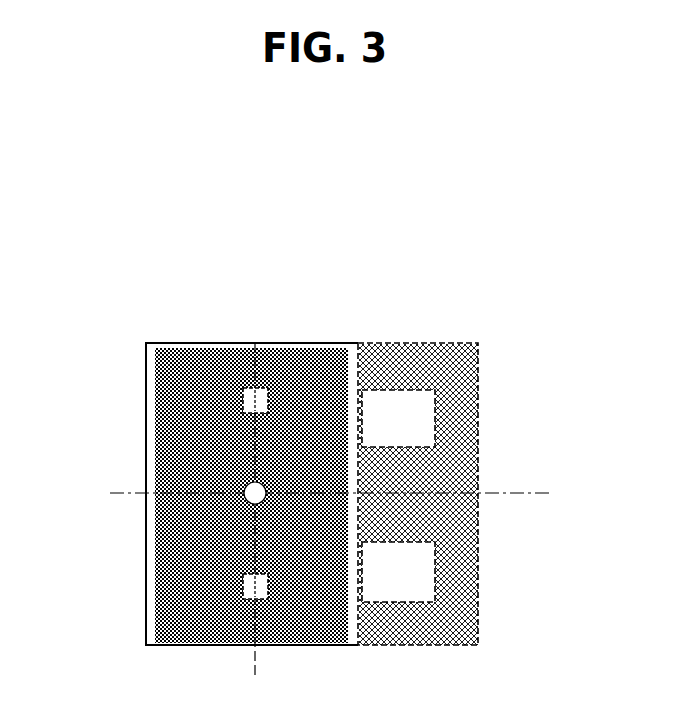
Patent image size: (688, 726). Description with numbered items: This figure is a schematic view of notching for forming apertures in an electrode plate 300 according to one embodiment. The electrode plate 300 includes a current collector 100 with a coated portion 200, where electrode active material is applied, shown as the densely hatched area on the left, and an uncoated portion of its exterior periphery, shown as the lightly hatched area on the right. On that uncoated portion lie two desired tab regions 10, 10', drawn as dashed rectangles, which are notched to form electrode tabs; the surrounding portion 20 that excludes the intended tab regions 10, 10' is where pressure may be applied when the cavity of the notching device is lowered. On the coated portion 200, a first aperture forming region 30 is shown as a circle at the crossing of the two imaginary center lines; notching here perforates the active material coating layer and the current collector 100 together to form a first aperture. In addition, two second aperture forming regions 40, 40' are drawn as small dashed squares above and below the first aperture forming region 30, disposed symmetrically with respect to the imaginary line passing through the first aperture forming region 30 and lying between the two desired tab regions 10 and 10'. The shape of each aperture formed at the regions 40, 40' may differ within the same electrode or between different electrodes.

The current collector 100 is at (99, 491).
The coated portion 200 is at (269, 465).
The electrode plate 300 is at (250, 326).
The portion excluding the tab region 20 is at (467, 481).
The electrode tab region 10 is at (469, 400).
The electrode tab region 10' is at (472, 553).
The first aperture forming region 30 is at (159, 446).
The second aperture forming region 40 is at (161, 552).
The second aperture forming region 40' is at (160, 352).